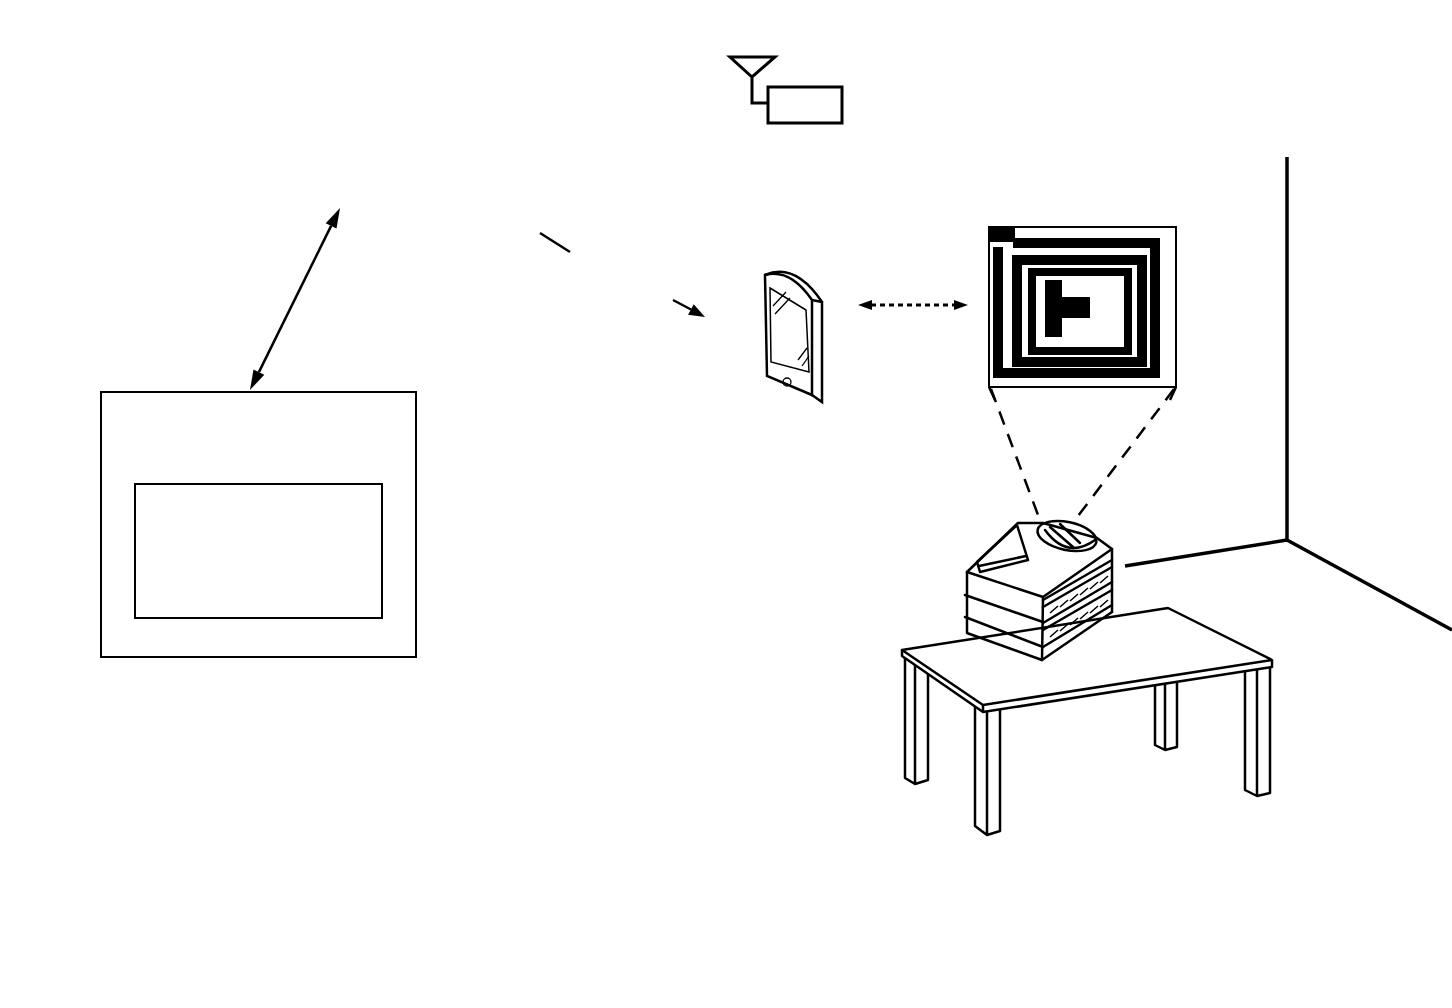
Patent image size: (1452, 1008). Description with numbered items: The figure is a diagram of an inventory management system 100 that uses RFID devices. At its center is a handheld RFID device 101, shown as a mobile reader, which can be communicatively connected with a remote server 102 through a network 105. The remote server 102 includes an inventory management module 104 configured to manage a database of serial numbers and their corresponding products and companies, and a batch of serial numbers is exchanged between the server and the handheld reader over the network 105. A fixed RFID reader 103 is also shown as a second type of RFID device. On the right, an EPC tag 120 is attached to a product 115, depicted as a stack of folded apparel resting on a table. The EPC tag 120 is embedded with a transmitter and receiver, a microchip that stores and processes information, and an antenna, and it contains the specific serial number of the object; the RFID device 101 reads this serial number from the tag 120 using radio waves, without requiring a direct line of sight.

The inventory management system 100 is at (207, 60).
The RFID device 101 is at (813, 403).
The remote server 102 is at (258, 524).
The fixed RFID reader 103 is at (808, 123).
The inventory management module 104 is at (258, 551).
The network 105 is at (345, 246).
The product 115 is at (967, 572).
The EPC tag 120 is at (1139, 227).